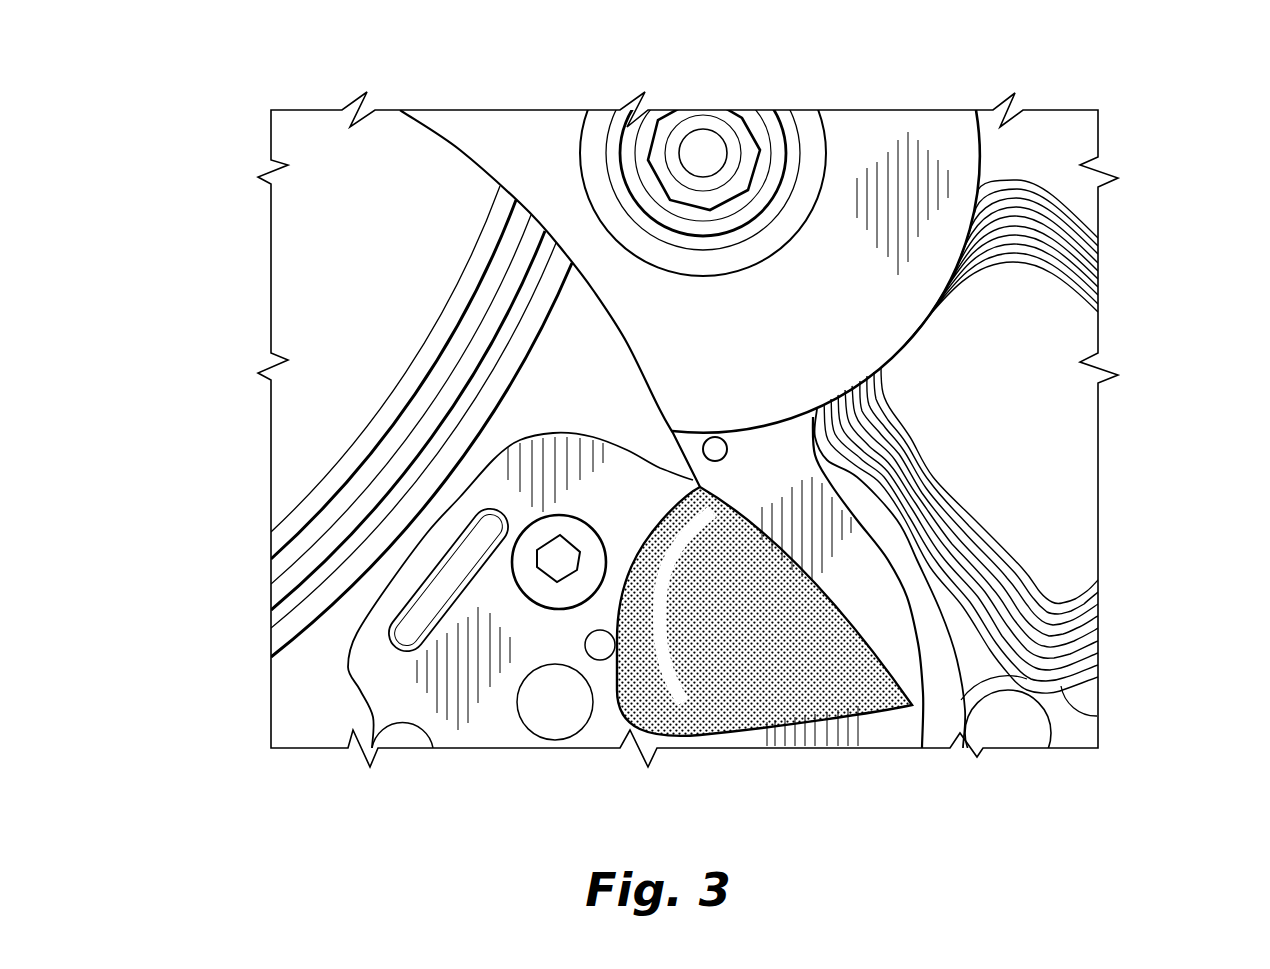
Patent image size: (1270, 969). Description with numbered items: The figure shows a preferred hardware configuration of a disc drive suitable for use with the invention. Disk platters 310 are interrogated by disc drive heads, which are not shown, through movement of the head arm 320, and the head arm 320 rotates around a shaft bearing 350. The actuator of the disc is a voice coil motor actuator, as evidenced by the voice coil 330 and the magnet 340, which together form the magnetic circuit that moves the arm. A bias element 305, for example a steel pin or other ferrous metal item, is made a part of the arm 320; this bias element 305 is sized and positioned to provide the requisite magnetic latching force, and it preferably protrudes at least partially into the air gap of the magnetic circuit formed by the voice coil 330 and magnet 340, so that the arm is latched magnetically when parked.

The bias element 305 is at (715, 437).
The disk platters 310 is at (315, 480).
The head arm 320 is at (520, 138).
The voice coil 330 is at (1060, 613).
The magnet 340 is at (683, 700).
The shaft bearing 350 is at (775, 138).